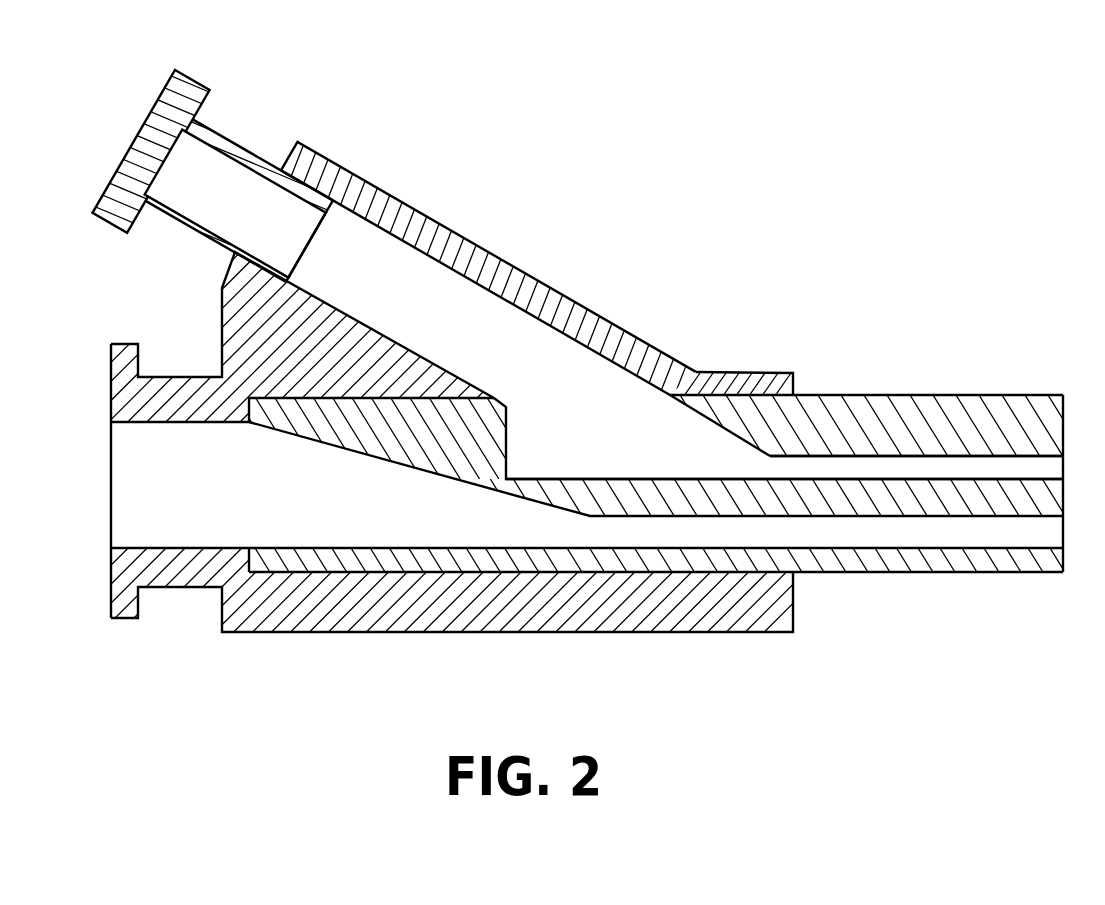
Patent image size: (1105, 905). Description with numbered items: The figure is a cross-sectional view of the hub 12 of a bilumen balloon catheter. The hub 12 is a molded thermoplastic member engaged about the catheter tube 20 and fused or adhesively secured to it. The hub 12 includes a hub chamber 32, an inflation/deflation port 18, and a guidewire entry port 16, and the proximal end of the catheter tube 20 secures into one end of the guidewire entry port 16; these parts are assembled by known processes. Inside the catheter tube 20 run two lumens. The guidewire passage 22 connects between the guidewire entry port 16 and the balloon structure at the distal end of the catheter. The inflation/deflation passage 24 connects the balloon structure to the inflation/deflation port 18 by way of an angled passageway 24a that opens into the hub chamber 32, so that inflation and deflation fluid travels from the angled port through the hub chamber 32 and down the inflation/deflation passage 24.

The hub 12 is at (555, 336).
The guidewire entry port 16 is at (436, 441).
The inflation/deflation port 18 is at (210, 171).
The catheter tube 20 is at (871, 450).
The guidewire passage 22 is at (588, 583).
The inflation/deflation passage 24 is at (796, 416).
The angled passageway 24a is at (650, 429).
The hub chamber 32 is at (525, 299).